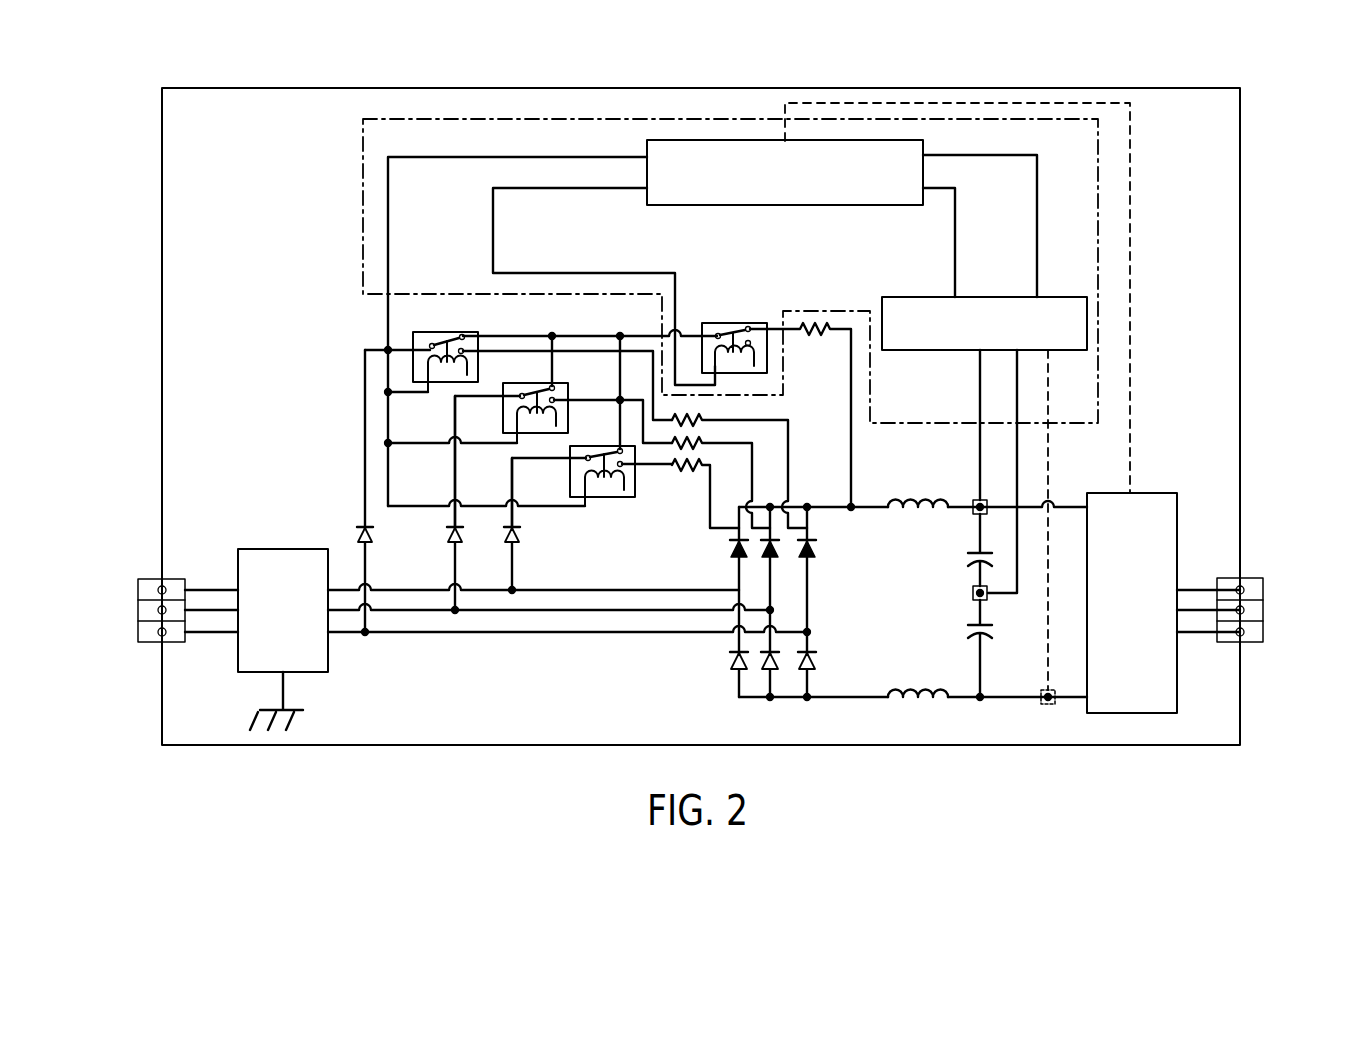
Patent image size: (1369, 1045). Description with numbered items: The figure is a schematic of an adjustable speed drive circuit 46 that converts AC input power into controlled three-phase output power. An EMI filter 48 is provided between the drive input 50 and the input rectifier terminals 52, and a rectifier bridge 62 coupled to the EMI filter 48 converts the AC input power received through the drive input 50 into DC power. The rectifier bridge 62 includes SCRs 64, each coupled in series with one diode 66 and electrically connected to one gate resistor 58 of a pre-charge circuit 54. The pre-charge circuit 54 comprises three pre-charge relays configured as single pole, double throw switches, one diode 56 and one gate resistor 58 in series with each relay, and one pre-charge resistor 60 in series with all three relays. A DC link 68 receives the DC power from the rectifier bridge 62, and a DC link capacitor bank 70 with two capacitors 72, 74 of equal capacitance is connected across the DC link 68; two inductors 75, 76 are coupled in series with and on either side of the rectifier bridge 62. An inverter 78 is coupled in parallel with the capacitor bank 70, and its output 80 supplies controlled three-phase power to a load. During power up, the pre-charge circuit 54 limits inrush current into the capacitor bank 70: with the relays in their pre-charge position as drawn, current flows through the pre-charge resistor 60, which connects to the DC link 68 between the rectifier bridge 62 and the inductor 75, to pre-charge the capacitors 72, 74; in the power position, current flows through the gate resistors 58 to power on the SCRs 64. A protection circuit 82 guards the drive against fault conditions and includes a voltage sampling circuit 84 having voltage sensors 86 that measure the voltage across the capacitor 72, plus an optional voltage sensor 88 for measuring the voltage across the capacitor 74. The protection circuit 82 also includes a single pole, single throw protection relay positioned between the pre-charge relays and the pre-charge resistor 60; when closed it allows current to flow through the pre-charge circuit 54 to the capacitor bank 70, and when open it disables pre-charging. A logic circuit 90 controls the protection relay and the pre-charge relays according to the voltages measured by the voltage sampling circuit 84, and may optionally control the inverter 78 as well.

The ASD circuit 46 is at (276, 88).
The EMI filter 48 is at (283, 549).
The drive input 50 is at (150, 579).
The input rectifier terminals 52 is at (812, 633).
The pre-charge circuit 54 is at (330, 428).
The diode 56 is at (452, 542).
The gate resistor 58 is at (673, 470).
The pre-charge resistor 60 is at (812, 333).
The rectifier bridge 62 is at (836, 580).
The SCRs 64 is at (804, 551).
The diode 66 is at (804, 668).
The DC link 68 is at (826, 505).
The DC link capacitor bank 70 is at (952, 612).
The capacitor 72 is at (976, 553).
The capacitor 74 is at (986, 639).
The inductor 75 is at (930, 499).
The inductor 76 is at (926, 689).
The inverter 78 is at (1153, 493).
The output 80 is at (1251, 643).
The protection circuit 82 is at (1098, 212).
The voltage sampling circuit 84 is at (935, 297).
The voltage sensors 86 is at (974, 504).
The voltage sensor 88 is at (1046, 706).
The logic circuit 90 is at (785, 206).